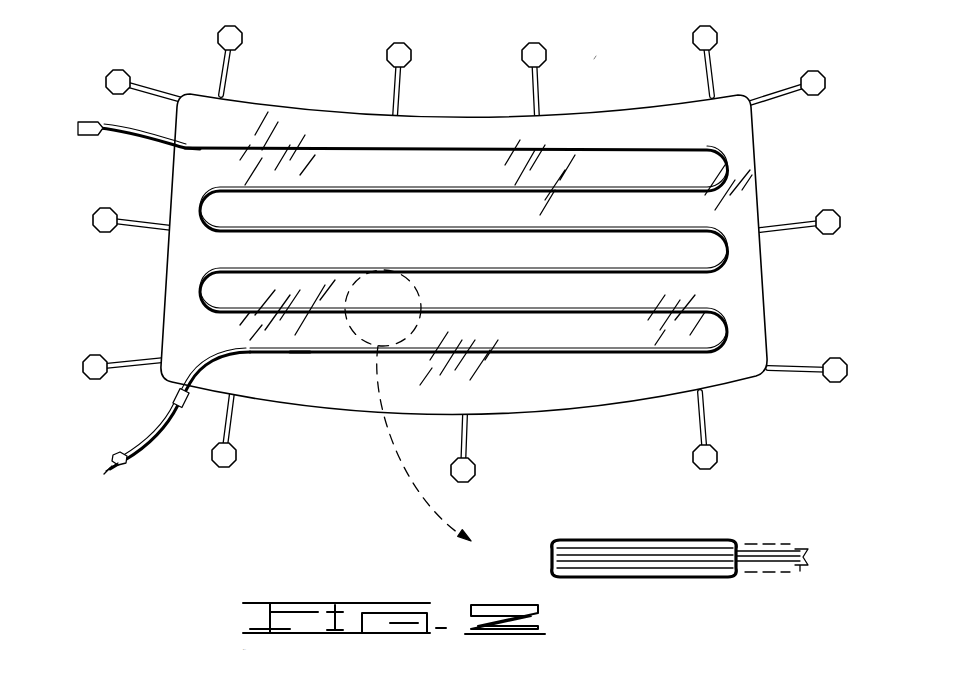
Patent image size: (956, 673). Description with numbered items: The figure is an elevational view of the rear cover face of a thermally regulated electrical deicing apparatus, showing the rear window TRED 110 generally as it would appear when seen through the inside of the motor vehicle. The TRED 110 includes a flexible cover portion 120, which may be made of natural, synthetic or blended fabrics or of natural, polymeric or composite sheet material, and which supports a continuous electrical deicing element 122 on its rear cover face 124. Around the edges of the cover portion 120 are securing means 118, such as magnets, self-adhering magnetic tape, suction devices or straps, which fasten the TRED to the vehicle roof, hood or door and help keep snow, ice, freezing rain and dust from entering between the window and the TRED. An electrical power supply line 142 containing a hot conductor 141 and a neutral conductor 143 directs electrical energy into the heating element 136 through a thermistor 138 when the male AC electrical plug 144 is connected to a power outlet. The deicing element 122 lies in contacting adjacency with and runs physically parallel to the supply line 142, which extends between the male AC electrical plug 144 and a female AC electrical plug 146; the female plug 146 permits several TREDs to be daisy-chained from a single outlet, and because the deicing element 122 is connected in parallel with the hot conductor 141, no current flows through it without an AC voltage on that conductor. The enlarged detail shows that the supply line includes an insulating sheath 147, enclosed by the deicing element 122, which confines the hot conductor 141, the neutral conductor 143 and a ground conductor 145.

The rear window TRED 110 is at (600, 52).
The securing means 118 is at (400, 50).
The flexible cover portion 120 is at (770, 193).
The electrical deicing element 122 is at (736, 335).
The rear cover face 124 is at (736, 288).
The heating element 136 is at (305, 362).
The thermistor 138 is at (186, 410).
The hot conductor 141 is at (108, 462).
The electrical power supply line 142 is at (150, 142).
The neutral conductor 143 is at (108, 470).
The male AC electrical plug 144 is at (130, 465).
The ground conductor 145 is at (560, 558).
The female AC electrical plug 146 is at (85, 133).
The insulating sheath 147 is at (748, 572).